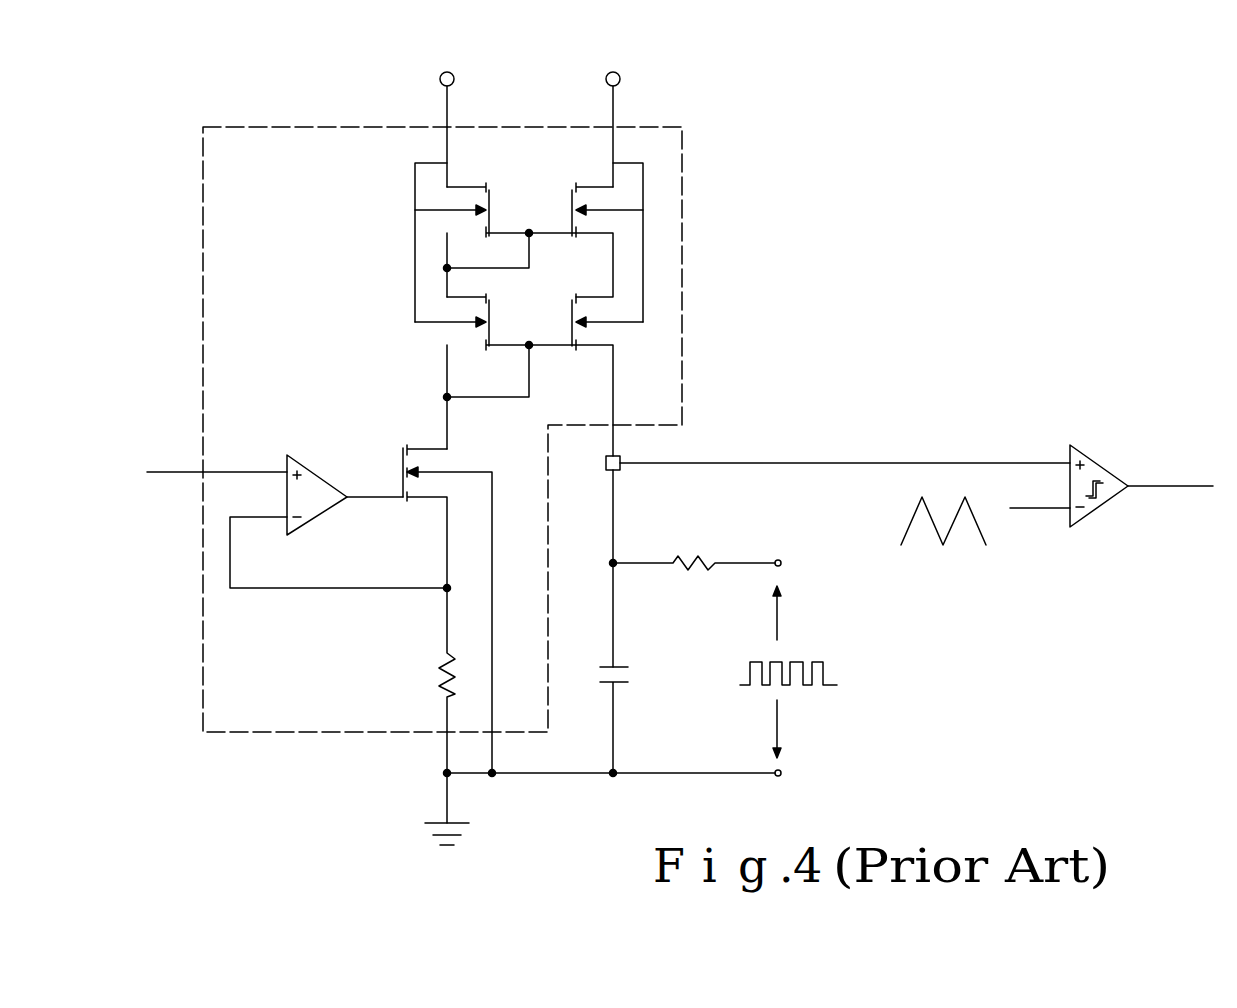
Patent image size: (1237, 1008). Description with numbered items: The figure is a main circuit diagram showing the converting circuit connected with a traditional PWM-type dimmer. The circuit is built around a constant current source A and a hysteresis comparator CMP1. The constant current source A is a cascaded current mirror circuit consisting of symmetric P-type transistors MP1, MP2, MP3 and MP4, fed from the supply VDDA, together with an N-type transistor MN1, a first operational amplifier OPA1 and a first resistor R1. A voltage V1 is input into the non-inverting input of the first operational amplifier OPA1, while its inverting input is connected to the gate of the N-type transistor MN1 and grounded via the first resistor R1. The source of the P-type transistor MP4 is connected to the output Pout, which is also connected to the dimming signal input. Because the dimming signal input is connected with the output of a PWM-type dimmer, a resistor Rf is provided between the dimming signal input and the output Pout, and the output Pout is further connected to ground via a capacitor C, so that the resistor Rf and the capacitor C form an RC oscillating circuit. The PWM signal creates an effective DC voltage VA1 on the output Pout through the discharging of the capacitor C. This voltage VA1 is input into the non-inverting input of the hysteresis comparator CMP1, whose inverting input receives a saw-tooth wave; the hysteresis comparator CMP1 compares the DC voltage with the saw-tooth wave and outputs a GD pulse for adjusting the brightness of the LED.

The constant current source A is at (682, 278).
The analog supply voltage VDDA is at (527, 115).
The P-type transistor MP1 is at (472, 238).
The P-type transistor MP2 is at (474, 340).
The P-type transistor MP3 is at (586, 238).
The P-type transistor MP4 is at (586, 375).
The N-type transistor MN1 is at (433, 594).
The first operational amplifier OPA1 is at (338, 504).
The voltage V1 is at (209, 455).
The first resistor R1 is at (427, 704).
The output Pout is at (639, 561).
The capacitor C is at (629, 718).
The resistor Rf is at (694, 584).
The effective DC voltage VA1 is at (845, 488).
The hysteresis comparator CMP1 is at (1069, 468).
The GD pulse GD is at (1170, 469).